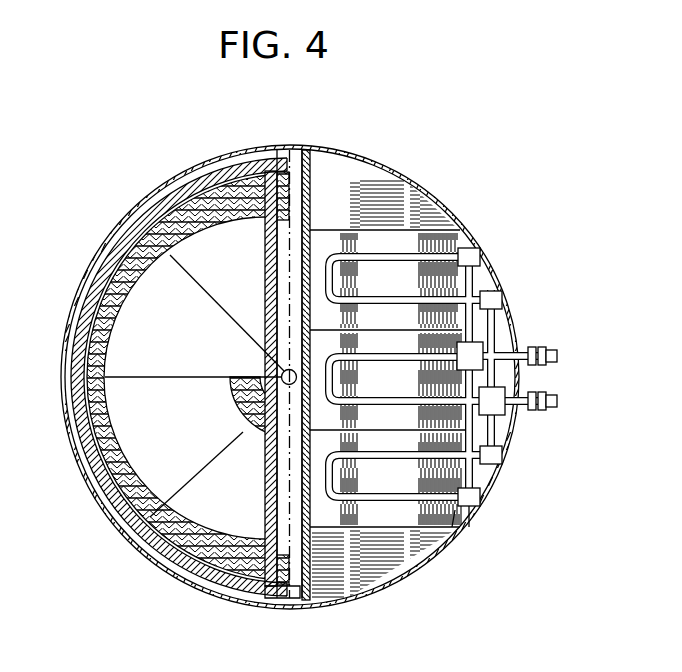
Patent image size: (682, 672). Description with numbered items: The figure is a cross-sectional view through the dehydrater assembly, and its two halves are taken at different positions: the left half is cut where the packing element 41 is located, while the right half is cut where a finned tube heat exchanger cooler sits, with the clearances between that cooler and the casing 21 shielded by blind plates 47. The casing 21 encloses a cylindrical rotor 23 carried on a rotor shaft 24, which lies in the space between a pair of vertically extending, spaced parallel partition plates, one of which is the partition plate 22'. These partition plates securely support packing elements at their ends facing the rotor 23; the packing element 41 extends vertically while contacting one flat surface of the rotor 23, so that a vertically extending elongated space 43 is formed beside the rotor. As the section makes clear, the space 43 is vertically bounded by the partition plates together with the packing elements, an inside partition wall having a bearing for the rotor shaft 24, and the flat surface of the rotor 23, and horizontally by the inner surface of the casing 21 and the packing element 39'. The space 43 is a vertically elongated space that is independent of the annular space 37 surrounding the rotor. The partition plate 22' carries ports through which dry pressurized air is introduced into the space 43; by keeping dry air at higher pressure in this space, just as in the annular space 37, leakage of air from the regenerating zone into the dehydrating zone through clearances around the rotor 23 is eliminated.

The casing 21 is at (126, 218).
The annular space 37 is at (208, 168).
The packing element 39' is at (290, 340).
The partition plate 22' is at (339, 375).
The rotor 23 is at (178, 352).
The rotor shaft 24 is at (281, 373).
The packing element 41 is at (268, 498).
The elongated space 43 is at (283, 468).
The blind plate 47 is at (398, 209).